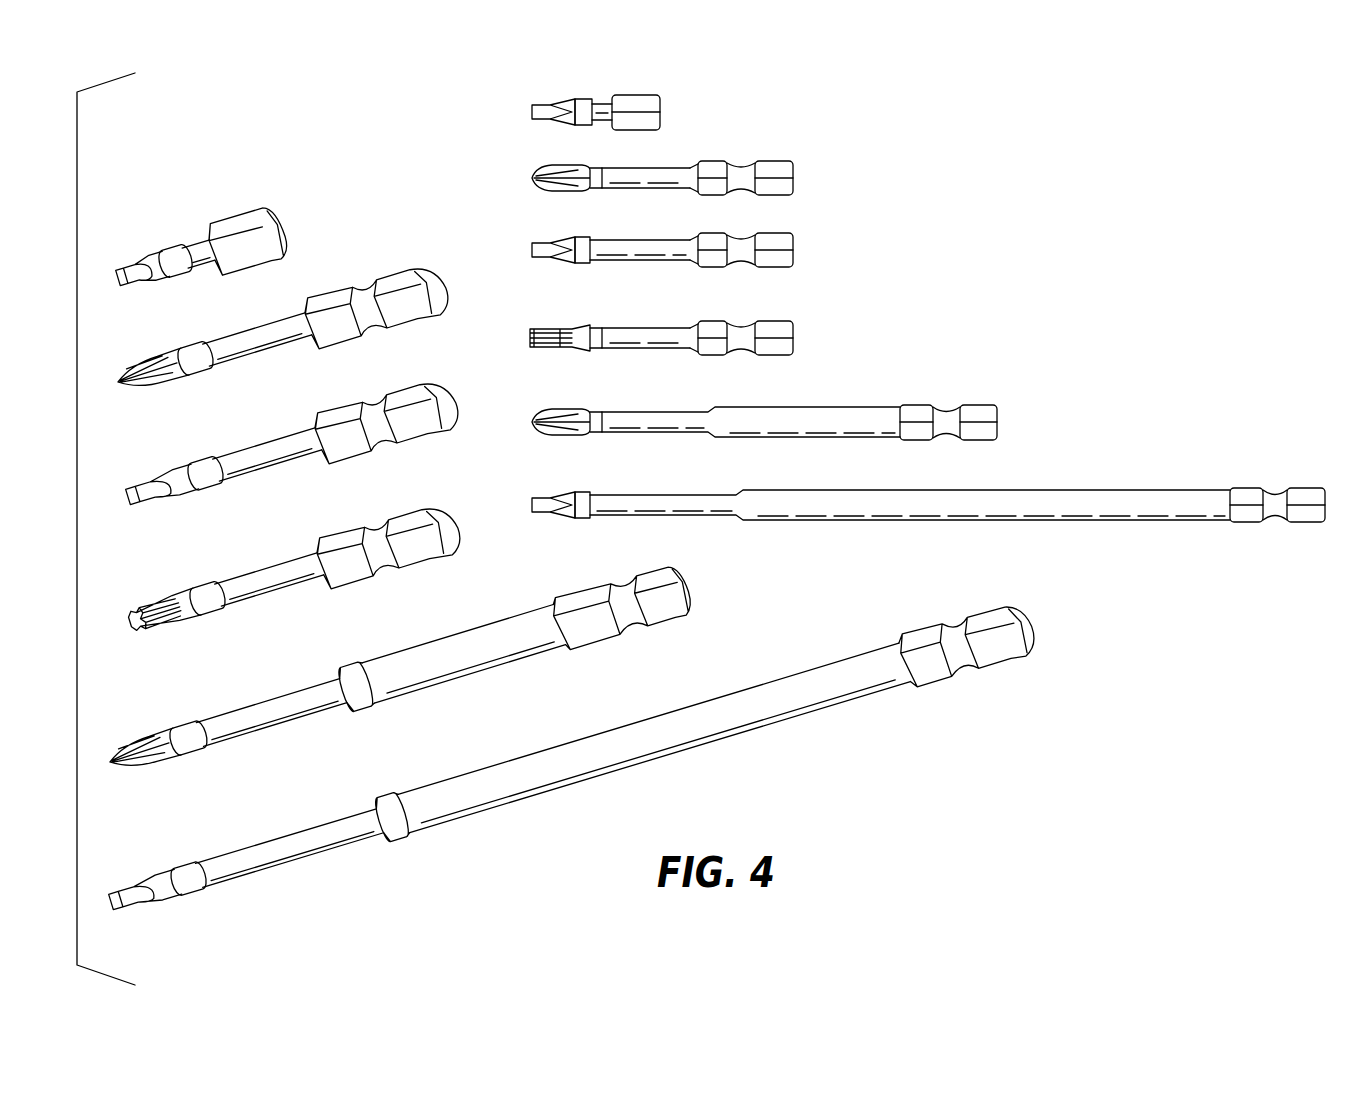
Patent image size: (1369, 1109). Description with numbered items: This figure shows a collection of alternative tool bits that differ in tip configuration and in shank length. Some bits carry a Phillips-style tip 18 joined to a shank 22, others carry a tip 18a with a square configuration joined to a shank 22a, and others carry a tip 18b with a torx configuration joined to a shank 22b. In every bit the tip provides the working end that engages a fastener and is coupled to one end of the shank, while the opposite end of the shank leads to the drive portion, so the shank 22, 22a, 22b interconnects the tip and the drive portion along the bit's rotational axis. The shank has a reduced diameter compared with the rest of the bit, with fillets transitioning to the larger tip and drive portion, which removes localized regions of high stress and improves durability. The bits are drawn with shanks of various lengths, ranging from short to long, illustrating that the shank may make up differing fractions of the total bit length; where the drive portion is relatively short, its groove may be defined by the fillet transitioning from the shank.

The tip 18 is at (163, 330).
The tip with square configuration 18a is at (136, 243).
The tip with torx configuration 18b is at (173, 573).
The shank 22 is at (263, 330).
The shank 22a is at (210, 242).
The shank 22b is at (270, 577).